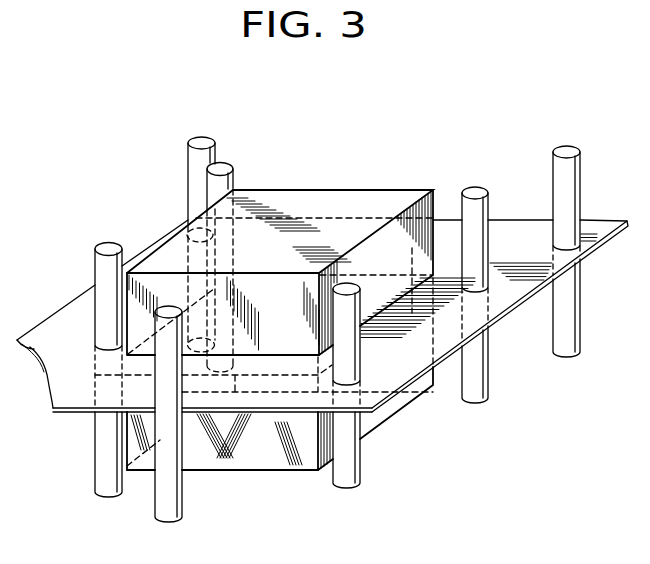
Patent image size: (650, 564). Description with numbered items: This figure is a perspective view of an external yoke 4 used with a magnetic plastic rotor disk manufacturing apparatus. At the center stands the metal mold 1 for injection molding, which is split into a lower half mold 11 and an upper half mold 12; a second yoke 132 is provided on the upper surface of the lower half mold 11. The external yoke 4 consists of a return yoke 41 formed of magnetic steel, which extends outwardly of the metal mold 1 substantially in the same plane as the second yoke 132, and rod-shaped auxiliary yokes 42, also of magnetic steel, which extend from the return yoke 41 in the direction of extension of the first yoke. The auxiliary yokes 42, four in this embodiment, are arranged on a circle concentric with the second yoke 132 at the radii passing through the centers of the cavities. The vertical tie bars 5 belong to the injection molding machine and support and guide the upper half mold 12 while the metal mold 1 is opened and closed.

The metal mold 1 is at (302, 309).
The external yoke 4 is at (322, 331).
The tie bars 5 is at (198, 162).
The lower half mold 11 is at (397, 404).
The upper half mold 12 is at (367, 198).
The return yoke 41 is at (524, 284).
The auxiliary yokes 42 is at (224, 158).
The second yoke 132 is at (412, 313).